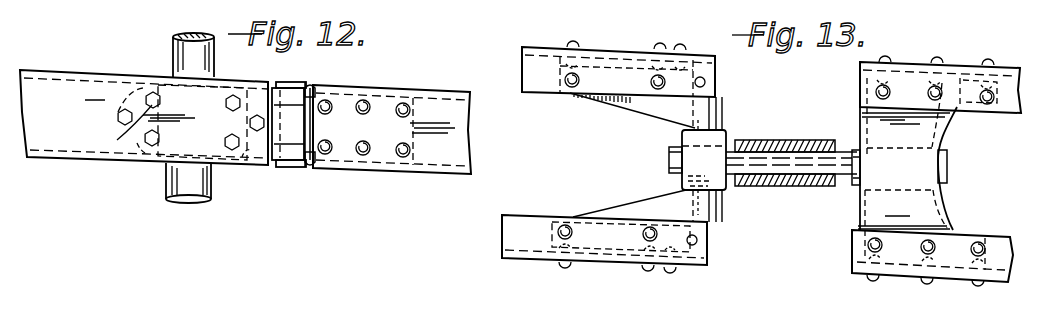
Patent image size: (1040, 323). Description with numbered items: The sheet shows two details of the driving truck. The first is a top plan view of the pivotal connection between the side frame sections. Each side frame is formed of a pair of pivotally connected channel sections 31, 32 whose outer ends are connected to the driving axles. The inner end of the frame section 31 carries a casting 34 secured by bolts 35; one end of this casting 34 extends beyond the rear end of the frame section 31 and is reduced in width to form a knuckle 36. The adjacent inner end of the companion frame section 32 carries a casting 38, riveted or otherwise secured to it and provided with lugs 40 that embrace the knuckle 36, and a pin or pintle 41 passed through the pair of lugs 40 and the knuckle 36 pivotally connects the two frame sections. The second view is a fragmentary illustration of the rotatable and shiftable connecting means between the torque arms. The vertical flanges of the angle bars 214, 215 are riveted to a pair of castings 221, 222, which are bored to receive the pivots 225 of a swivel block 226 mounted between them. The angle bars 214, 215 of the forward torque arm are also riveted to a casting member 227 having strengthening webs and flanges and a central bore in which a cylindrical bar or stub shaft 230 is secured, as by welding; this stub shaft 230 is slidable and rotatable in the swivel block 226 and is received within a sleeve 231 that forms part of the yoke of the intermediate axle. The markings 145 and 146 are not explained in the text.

In FIG. 12, the frame section 31 is at (40, 67).
In FIG. 12, the frame section 32 is at (470, 86).
In FIG. 12, the casting 34 is at (247, 163).
In FIG. 12, the bolts 35 is at (143, 138).
In FIG. 12, the knuckle 36 is at (306, 128).
In FIG. 12, the casting 38 is at (414, 145).
In FIG. 12, the lugs 40 is at (313, 88).
In FIG. 12, the pin or pintle 41 is at (303, 169).
In FIG. 13, the panel section 145 is at (494, 249).
In FIG. 13, the panel section 146 is at (989, 290).
In FIG. 13, the angle bar 214 is at (527, 93).
In FIG. 13, the angle bar 215 is at (520, 221).
In FIG. 13, the casting 221 is at (662, 113).
In FIG. 13, the casting 222 is at (644, 199).
In FIG. 13, the pivots 225 is at (724, 101).
In FIG. 13, the swivel block 226 is at (726, 132).
In FIG. 13, the casting member 227 is at (946, 150).
In FIG. 13, the cylindrical bar or stub shaft 230 is at (813, 180).
In FIG. 13, the sleeve 231 is at (836, 132).